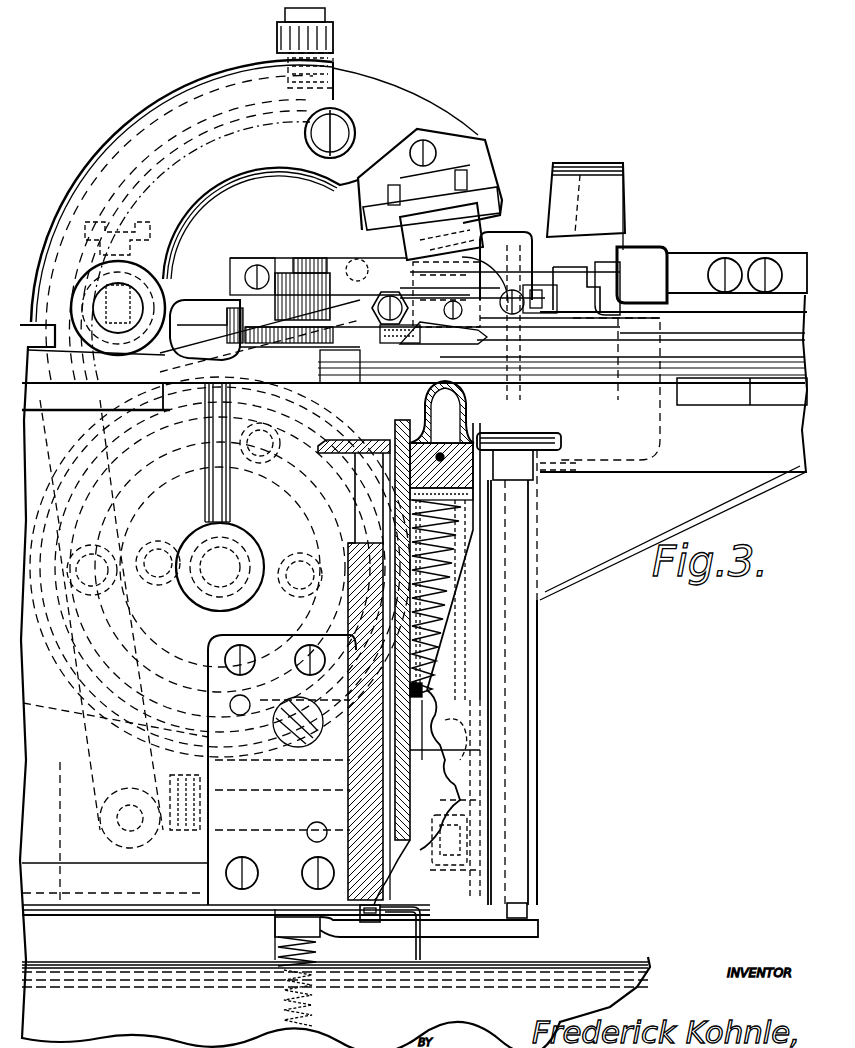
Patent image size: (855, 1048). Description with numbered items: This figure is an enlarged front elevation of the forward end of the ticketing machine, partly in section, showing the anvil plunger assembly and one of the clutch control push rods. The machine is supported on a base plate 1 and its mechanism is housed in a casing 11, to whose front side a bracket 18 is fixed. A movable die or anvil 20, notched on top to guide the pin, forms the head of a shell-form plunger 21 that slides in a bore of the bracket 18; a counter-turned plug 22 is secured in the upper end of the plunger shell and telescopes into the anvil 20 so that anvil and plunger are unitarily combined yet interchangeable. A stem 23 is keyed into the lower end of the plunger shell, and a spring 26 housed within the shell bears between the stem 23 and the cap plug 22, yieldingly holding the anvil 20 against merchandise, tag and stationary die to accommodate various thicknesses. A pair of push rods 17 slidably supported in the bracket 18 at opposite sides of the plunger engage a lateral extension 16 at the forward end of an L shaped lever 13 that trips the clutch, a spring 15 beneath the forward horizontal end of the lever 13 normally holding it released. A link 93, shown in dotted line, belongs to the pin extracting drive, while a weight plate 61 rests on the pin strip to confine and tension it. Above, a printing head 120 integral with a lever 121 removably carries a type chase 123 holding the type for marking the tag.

The base plate 1 is at (147, 934).
The casing 11 is at (413, 671).
The L shaped lever 13 is at (280, 927).
The spring 15 is at (317, 952).
The lateral extension 16 is at (539, 925).
The push rods 17 is at (363, 523).
The bracket 18 is at (540, 687).
The movable die or anvil 20 is at (465, 400).
The plunger 21 is at (445, 734).
The plug 22 is at (441, 461).
The stem 23 is at (450, 800).
The spring 26 is at (440, 623).
The weight plate 61 is at (597, 163).
The link 93 is at (647, 433).
The printing head 120 is at (480, 147).
The lever 121 is at (377, 92).
The type chase 123 is at (460, 207).